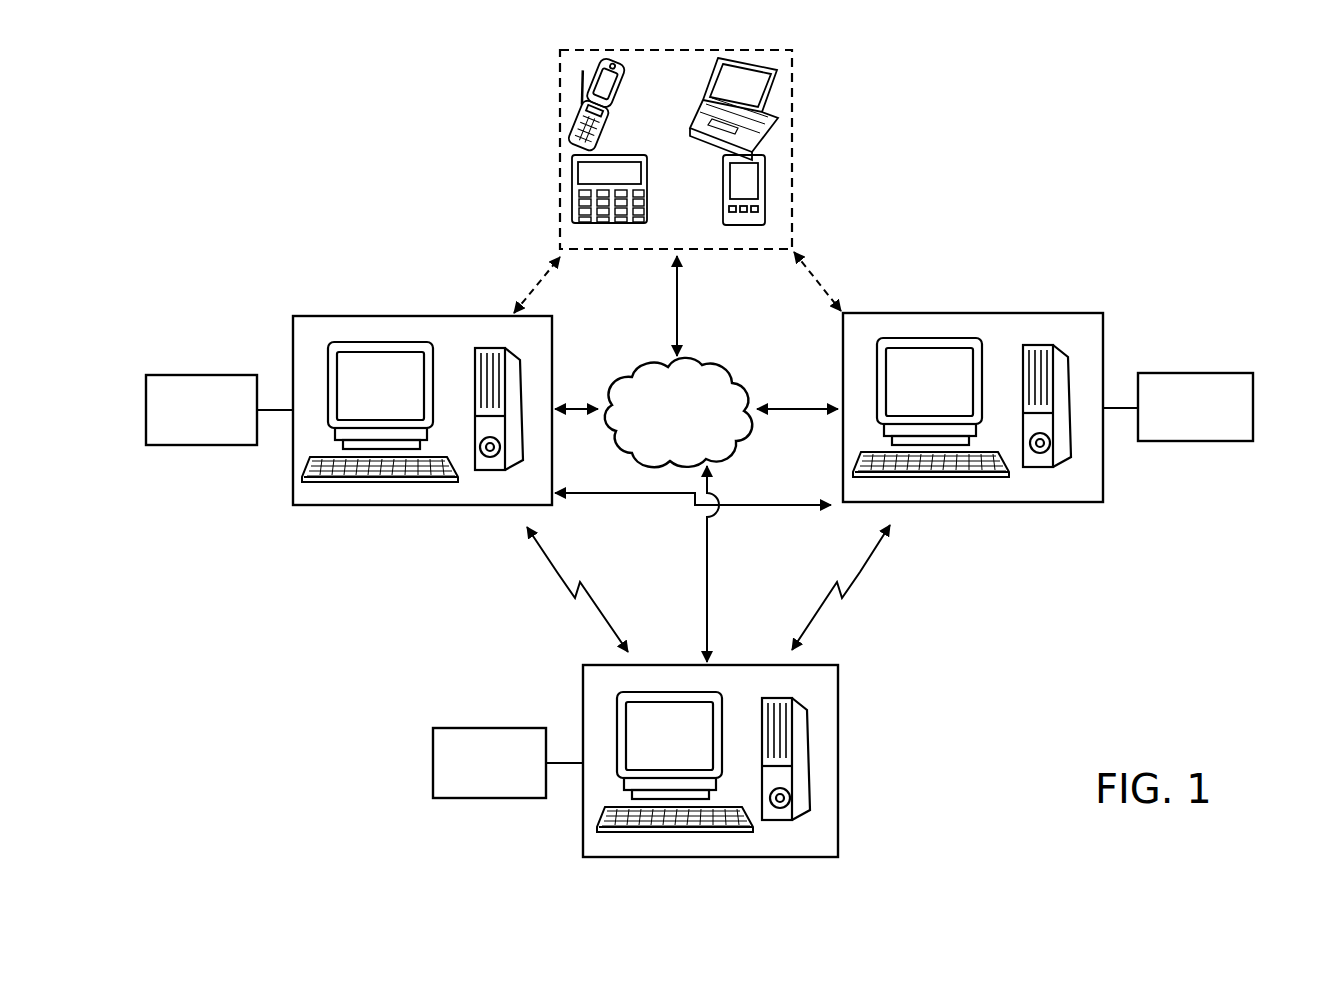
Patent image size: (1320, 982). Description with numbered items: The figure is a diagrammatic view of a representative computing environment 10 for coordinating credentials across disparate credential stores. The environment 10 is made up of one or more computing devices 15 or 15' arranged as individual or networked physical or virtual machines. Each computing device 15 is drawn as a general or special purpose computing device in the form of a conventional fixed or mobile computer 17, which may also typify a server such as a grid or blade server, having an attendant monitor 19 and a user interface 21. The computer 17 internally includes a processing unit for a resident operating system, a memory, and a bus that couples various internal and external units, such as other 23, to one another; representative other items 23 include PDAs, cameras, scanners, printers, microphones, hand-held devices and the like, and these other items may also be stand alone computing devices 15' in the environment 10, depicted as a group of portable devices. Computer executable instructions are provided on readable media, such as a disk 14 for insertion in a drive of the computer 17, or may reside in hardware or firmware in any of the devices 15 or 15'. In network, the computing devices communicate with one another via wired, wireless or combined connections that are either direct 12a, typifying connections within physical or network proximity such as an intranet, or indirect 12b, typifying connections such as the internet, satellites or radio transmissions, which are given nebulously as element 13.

The computing environment 10 is at (274, 210).
The direct connections 12a is at (534, 288).
The indirect connections 12b is at (678, 312).
The nebulous network element 13 is at (725, 362).
The disk 14 is at (482, 443).
The computing device 15 is at (698, 536).
The stand alone computing device 15' is at (722, 149).
The computer 17 is at (488, 470).
The monitor 19 is at (337, 343).
The user interface 21 is at (360, 482).
The other items 23 is at (185, 375).